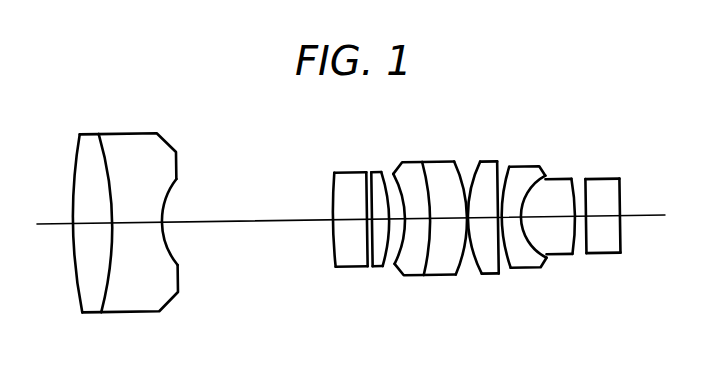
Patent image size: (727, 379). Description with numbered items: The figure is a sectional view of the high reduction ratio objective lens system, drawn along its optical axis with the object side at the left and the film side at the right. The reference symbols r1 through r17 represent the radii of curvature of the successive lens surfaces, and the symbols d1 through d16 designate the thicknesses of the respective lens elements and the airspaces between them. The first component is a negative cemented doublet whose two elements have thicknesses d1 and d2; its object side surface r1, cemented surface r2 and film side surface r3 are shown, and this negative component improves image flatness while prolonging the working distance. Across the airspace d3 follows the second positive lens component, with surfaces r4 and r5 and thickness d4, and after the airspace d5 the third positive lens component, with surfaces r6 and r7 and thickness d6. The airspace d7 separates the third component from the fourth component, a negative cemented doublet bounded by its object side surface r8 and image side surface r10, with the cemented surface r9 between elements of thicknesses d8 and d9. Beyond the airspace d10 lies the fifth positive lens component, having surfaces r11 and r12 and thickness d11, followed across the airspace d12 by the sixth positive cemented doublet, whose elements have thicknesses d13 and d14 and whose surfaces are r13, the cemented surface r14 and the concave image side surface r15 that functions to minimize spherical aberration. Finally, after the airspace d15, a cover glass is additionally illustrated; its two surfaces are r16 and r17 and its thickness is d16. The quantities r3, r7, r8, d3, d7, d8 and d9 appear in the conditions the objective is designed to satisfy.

The thickness of first lens element d1 is at (92, 224).
The thickness of second lens element d2 is at (137, 224).
The airspace between first and second lens components d3 is at (256, 224).
The thickness of second lens component d4 is at (350, 224).
The airspace between second and third lens components d5 is at (363, 222).
The thickness of third lens component d6 is at (381, 221).
The airspace between third and fourth lens components d7 is at (408, 224).
The thickness of object side element of fourth lens component d8 is at (431, 224).
The thickness of image side element of fourth lens component d9 is at (446, 224).
The airspace between fourth and fifth lens components d10 is at (467, 224).
The thickness of fifth lens component d11 is at (491, 224).
The airspace between fifth and sixth lens components d12 is at (504, 224).
The thickness of object side element of sixth lens component d13 is at (514, 224).
The thickness of image side element of sixth lens component d14 is at (555, 224).
The airspace between sixth lens component and cover glass d15 is at (594, 224).
The thickness of cover glass d16 is at (608, 221).
The radius of curvature of object side surface of first lens component r1 is at (80, 311).
The radius of curvature of cemented surface of first lens component r2 is at (103, 302).
The radius of curvature on film side surface of first lens component r3 is at (177, 260).
The radius of curvature of object side surface of second lens component r4 is at (335, 262).
The radius of curvature of film side surface of second lens component r5 is at (365, 266).
The radius of curvature of object side surface of third lens component r6 is at (372, 272).
The radius of curvature on film side surface of third lens component r7 is at (382, 271).
The radius of curvature on object side surface of fourth lens component r8 is at (396, 270).
The radius of curvature of cemented surface of fourth lens component r9 is at (423, 280).
The radius of curvature of film side surface of fourth lens component r10 is at (457, 282).
The radius of curvature of object side surface of fifth lens component r11 is at (481, 280).
The radius of curvature of film side surface of fifth lens component r12 is at (498, 281).
The radius of curvature of object side surface of sixth lens component r13 is at (510, 275).
The radius of curvature of cemented surface of sixth lens component r14 is at (549, 262).
The radius of curvature of image side surface of sixth lens component r15 is at (574, 246).
The object side surface of cover glass r16 is at (590, 258).
The image side surface of cover glass r17 is at (620, 252).